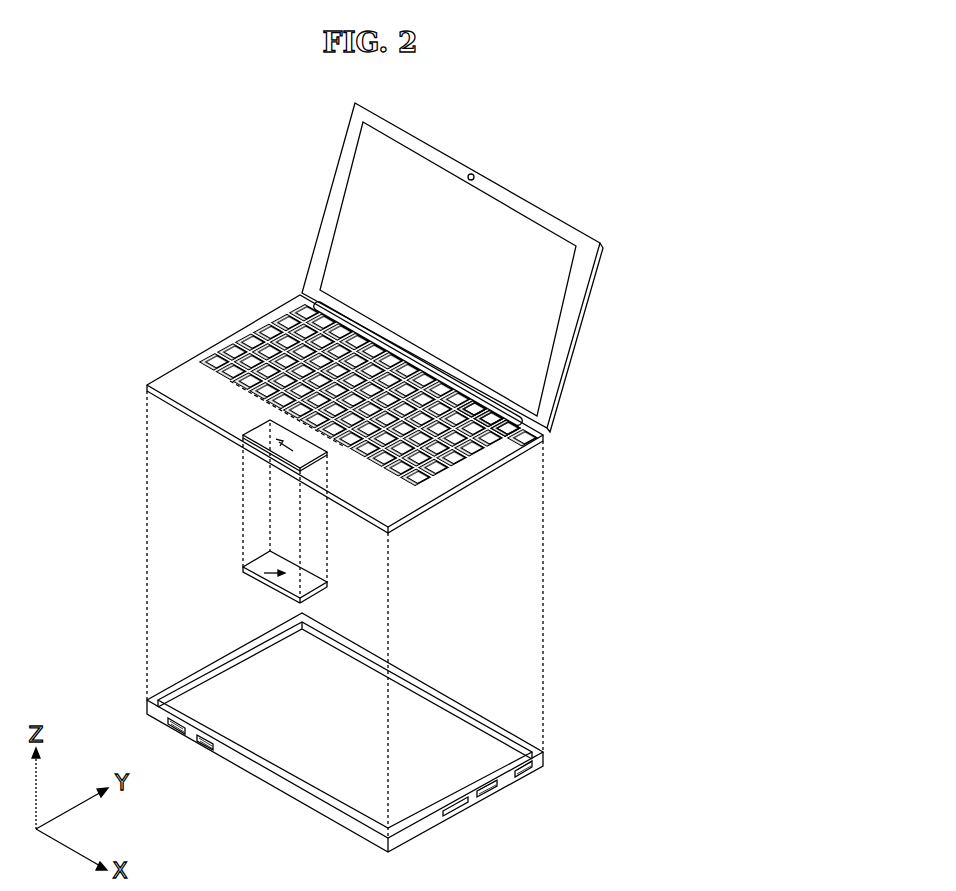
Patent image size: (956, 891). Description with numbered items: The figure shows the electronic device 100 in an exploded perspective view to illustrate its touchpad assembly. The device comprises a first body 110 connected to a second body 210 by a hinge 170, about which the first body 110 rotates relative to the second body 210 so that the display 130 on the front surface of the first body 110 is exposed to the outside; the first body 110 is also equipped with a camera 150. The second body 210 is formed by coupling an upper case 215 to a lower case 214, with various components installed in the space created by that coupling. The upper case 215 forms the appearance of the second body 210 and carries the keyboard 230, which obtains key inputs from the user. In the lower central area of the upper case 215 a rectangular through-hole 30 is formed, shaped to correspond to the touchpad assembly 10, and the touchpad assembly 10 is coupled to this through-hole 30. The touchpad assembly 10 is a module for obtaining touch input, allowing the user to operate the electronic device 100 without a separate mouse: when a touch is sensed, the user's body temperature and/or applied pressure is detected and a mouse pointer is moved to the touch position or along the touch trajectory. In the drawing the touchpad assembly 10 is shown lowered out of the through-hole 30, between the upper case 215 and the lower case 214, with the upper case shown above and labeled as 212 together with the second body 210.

The electronic device 100 is at (228, 143).
The first body 110 is at (488, 267).
The display 130 is at (348, 233).
The camera 150 is at (473, 175).
The hinge 170 is at (495, 407).
The second body 210 is at (342, 587).
The upper case of main body 212 is at (320, 433).
The lower case 214 is at (450, 812).
The upper case 215 is at (184, 376).
The keyboard 230 is at (455, 463).
The through-hole 30 is at (263, 447).
The touchpad assembly 10 is at (248, 573).